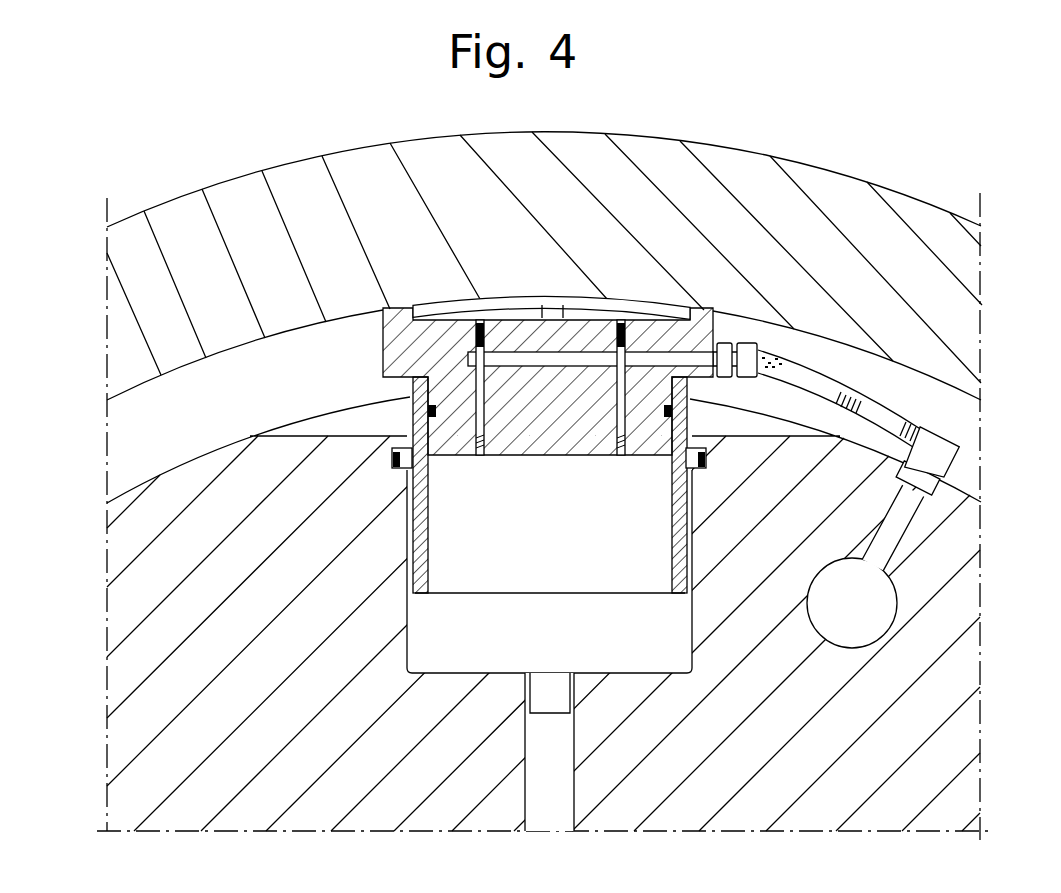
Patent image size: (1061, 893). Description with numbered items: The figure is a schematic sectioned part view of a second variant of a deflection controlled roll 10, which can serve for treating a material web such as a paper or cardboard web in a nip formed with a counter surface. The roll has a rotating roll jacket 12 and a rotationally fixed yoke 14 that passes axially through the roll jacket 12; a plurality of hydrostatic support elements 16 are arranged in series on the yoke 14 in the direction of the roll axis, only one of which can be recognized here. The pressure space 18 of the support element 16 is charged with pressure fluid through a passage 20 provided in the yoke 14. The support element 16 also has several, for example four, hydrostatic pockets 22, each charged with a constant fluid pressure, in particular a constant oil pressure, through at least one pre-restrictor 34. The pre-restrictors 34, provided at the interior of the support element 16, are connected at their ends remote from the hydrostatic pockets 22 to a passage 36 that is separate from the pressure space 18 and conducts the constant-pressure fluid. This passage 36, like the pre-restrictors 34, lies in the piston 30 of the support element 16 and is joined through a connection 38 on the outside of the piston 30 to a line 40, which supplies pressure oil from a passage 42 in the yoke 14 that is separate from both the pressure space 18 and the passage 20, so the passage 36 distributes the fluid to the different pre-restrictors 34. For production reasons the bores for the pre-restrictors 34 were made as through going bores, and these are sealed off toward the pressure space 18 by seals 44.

The deflection controlled roll 10 is at (778, 128).
The roll jacket 12 is at (848, 205).
The yoke 14 is at (133, 598).
The hydrostatic support element 16 is at (722, 326).
The pressure space 18 is at (408, 557).
The passage 20 is at (555, 808).
The hydrostatic pocket 22 is at (503, 300).
The piston 30 is at (383, 358).
The pre-restrictor 34 is at (470, 330).
The passage 36 is at (553, 352).
The connection 38 is at (777, 352).
The line 40 is at (899, 410).
The passage 42 is at (855, 625).
The seal 44 is at (479, 457).